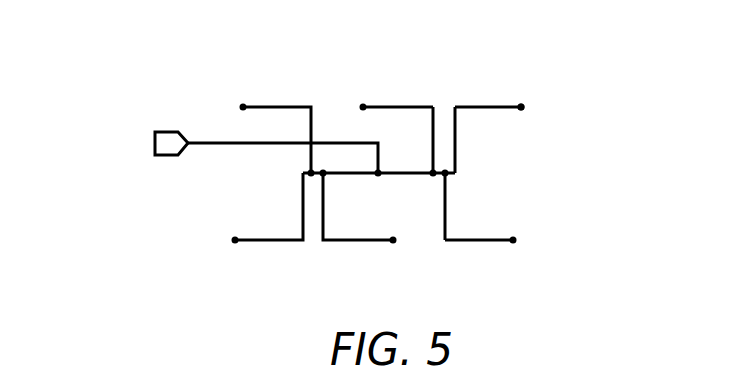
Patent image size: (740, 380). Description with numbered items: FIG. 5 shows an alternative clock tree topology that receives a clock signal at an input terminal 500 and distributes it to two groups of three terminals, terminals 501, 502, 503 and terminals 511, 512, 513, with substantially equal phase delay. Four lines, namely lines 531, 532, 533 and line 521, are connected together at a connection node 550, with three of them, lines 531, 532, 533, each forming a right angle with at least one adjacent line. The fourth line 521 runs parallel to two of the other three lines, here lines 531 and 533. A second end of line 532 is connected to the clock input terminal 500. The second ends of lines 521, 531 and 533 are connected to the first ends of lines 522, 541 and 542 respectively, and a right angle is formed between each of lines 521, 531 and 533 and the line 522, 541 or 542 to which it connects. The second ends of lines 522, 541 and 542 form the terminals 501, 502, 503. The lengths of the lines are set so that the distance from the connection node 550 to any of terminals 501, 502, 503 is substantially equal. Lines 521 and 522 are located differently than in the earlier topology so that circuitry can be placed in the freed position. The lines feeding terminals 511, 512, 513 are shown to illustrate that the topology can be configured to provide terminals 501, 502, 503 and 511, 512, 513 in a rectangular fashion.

The input terminal 500 is at (166, 132).
The terminal 501 is at (513, 242).
The terminal 502 is at (521, 107).
The terminal 503 is at (363, 107).
The terminal 511 is at (243, 107).
The terminal 512 is at (235, 242).
The terminal 513 is at (394, 243).
The line 521 is at (455, 137).
The line 522 is at (495, 107).
The line 531 is at (433, 133).
The line 532 is at (412, 175).
The line 533 is at (447, 212).
The line 541 is at (403, 107).
The line 542 is at (478, 242).
The connection node 550 is at (447, 175).